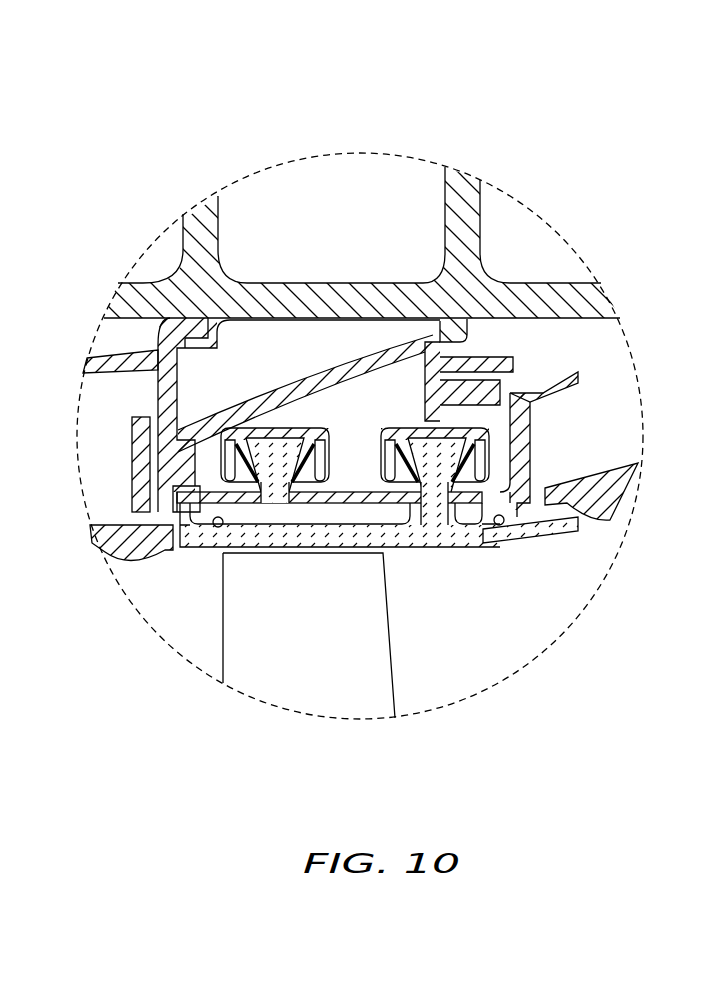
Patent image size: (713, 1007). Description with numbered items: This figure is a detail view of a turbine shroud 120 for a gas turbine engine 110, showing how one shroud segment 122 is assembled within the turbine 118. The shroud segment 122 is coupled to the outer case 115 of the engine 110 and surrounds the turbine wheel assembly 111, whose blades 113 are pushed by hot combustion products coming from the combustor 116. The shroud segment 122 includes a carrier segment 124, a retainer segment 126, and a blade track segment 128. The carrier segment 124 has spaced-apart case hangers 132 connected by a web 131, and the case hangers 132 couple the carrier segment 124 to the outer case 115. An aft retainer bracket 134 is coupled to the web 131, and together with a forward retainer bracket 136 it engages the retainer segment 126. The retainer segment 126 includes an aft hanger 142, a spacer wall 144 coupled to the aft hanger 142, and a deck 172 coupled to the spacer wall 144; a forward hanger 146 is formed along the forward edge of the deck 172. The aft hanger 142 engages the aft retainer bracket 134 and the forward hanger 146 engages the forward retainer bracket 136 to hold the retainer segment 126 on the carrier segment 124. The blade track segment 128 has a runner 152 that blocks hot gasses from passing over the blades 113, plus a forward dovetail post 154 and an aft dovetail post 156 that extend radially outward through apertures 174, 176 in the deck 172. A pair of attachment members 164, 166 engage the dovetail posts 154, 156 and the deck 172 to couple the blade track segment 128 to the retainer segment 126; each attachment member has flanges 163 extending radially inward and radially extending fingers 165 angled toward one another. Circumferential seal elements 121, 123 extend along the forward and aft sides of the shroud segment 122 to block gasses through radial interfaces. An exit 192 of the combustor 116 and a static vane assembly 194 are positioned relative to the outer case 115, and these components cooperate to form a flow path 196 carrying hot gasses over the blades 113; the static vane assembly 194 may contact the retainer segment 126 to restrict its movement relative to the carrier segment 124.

The gas turbine engine 110 is at (543, 117).
The turbine wheel assembly 111 is at (420, 714).
The blades 113 is at (372, 680).
The outer case 115 is at (400, 282).
The combustor 116 is at (117, 487).
The turbine 118 is at (633, 442).
The turbine shroud 120 is at (172, 316).
The circumferential seal element 121 is at (502, 531).
The shroud segment 122 is at (142, 343).
The circumferential seal element 123 is at (218, 535).
The carrier segment 124 is at (262, 385).
The retainer segment 126 is at (557, 402).
The blade track segment 128 is at (557, 532).
The web 131 is at (305, 362).
The case hangers 132 is at (430, 322).
The aft retainer bracket 134 is at (497, 398).
The forward retainer bracket 136 is at (166, 517).
The aft hanger 142 is at (492, 374).
The spacer wall 144 is at (531, 435).
The forward hanger 146 is at (120, 566).
The runner 152 is at (413, 548).
The forward dovetail post 154 is at (273, 470).
The aft dovetail post 156 is at (433, 490).
The flanges 163 is at (393, 467).
The attachment member 164 is at (307, 417).
The fingers 165 is at (392, 470).
The attachment member 166 is at (432, 323).
The deck 172 is at (382, 507).
The aperture 174 is at (297, 404).
The aperture 176 is at (458, 513).
The exit 192 is at (121, 556).
The static vane assembly 194 is at (626, 493).
The flow path 196 is at (562, 567).